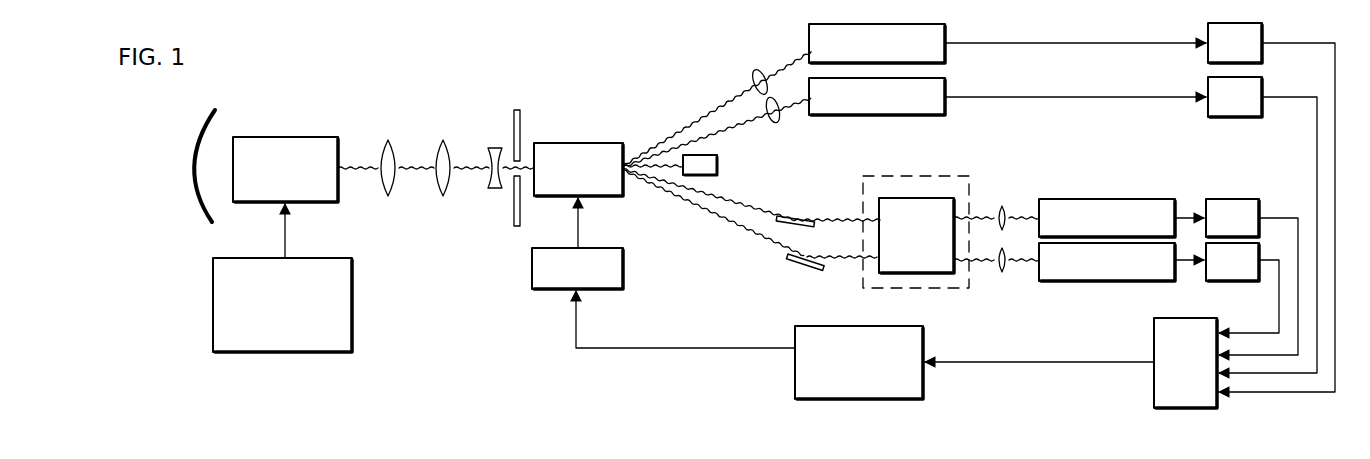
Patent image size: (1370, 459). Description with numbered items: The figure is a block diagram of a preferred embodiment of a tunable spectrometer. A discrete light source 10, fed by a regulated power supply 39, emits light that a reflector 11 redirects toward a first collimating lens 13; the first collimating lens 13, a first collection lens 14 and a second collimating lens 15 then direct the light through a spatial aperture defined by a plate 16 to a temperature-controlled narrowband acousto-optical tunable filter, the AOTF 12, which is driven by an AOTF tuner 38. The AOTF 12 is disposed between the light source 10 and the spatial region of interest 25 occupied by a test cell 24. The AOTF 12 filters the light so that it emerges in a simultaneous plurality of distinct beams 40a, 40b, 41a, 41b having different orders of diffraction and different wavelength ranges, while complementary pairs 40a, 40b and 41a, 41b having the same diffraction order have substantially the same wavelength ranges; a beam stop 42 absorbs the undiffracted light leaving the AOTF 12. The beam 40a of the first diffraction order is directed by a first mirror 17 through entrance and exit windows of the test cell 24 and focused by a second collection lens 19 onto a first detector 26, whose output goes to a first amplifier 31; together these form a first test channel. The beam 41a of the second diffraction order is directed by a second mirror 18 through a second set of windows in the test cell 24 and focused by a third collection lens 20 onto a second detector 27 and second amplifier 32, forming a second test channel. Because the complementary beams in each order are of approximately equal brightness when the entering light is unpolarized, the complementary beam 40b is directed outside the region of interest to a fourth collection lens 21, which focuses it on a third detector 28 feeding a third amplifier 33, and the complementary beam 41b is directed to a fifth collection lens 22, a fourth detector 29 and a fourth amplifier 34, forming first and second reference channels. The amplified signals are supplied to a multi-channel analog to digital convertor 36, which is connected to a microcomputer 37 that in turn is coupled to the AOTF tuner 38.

The discrete light source 10 is at (305, 137).
The reflector 11 is at (195, 143).
The temperature-controlled narrowband acousto-optical tunable filter (AOTF) 12 is at (605, 143).
The first collimating lens 13 is at (390, 141).
The first collection lens 14 is at (446, 141).
The second collimating lens 15 is at (495, 189).
The plate 16 is at (518, 110).
The first mirror 17 is at (805, 268).
The second mirror 18 is at (797, 224).
The second collection lens 19 is at (1003, 273).
The third collection lens 20 is at (1003, 206).
The fourth collection lens 21 is at (760, 70).
The fifth collection lens 22 is at (781, 125).
The test cell 24 is at (905, 198).
The spatial region of interest 25 is at (935, 176).
The first detector 26 is at (1115, 282).
The second detector 27 is at (1133, 199).
The third detector 28 is at (940, 24).
The fourth detector 29 is at (943, 78).
The first amplifier 31 is at (1259, 250).
The second amplifier 32 is at (1236, 199).
The third amplifier 33 is at (1247, 24).
The fourth amplifier 34 is at (1262, 80).
The multi-channel analog to digital convertor 36 is at (1205, 318).
The microcomputer 37 is at (923, 326).
The AOTF tuner 38 is at (623, 258).
The regulated power supply 39 is at (352, 270).
The beam 40a is at (730, 220).
The complementary beam 40b is at (725, 105).
The beam 41a is at (745, 205).
The complementary beam 41b is at (735, 112).
The beam stop 42 is at (687, 165).